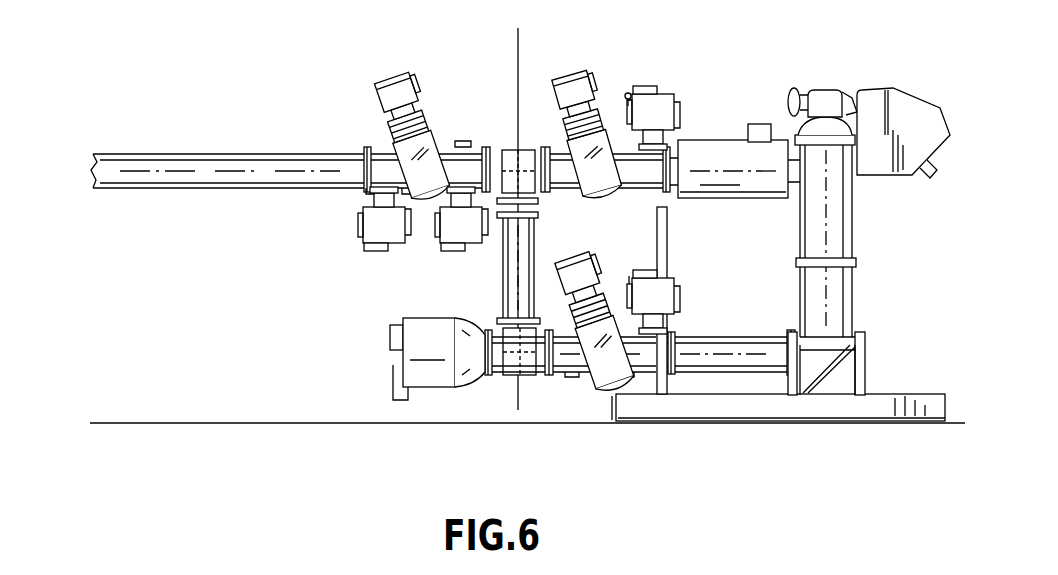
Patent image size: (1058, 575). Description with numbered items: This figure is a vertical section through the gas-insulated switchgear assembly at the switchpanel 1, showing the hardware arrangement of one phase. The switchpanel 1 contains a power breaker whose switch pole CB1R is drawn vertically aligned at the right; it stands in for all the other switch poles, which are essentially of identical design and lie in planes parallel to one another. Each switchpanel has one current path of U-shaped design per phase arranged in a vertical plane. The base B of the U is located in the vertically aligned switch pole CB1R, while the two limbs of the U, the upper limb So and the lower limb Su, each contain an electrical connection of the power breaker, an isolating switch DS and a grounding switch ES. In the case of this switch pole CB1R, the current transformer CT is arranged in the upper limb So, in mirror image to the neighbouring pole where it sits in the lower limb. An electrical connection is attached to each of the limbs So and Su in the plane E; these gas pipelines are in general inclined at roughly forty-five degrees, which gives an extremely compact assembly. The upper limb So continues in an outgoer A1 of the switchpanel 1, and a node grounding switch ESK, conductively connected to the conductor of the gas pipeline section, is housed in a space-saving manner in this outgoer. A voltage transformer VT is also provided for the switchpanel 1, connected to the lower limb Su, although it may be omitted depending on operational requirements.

The outgoer A1 is at (203, 166).
The plane E is at (518, 208).
The isolating switch DS is at (568, 90).
The grounding switch ES is at (652, 108).
The current transformer CT is at (723, 148).
The upper limb So is at (763, 125).
The switch pole CB1R is at (905, 112).
The base B is at (845, 295).
The node grounding switch ESK is at (455, 240).
The switchpanel 1 is at (268, 358).
The voltage transformer VT is at (436, 372).
The lower limb Su is at (762, 360).